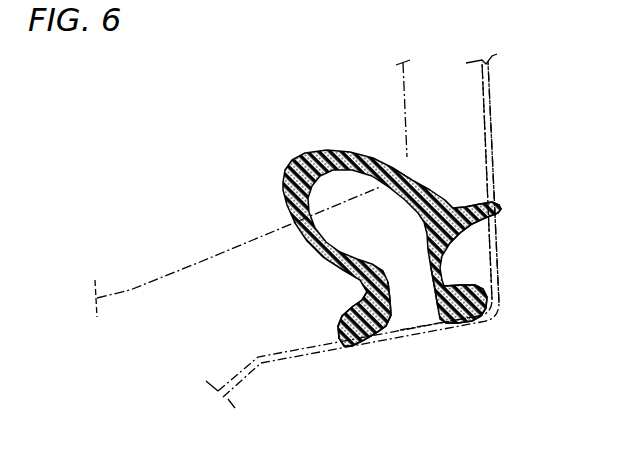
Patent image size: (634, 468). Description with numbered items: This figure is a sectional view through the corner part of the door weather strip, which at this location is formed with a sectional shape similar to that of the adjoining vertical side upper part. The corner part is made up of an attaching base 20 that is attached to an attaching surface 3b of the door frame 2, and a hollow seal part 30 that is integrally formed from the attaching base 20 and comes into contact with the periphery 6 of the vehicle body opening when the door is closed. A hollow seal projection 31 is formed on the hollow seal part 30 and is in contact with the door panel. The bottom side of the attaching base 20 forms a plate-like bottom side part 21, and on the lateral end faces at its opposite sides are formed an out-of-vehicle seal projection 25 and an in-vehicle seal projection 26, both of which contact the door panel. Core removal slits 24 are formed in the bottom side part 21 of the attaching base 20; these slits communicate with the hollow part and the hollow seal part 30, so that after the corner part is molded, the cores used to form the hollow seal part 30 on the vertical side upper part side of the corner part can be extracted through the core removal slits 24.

The door frame 2 is at (300, 357).
The attaching surface 3b is at (440, 337).
The periphery of the vehicle body opening 6 is at (193, 260).
The attaching base 20 is at (379, 326).
The bottom side part 21 is at (457, 327).
The core removal slits 24 is at (415, 305).
The out-of-vehicle seal projection 25 is at (472, 323).
The in-vehicle seal projection 26 is at (350, 341).
The hollow seal part 30 is at (293, 164).
The hollow seal projection 31 is at (503, 210).